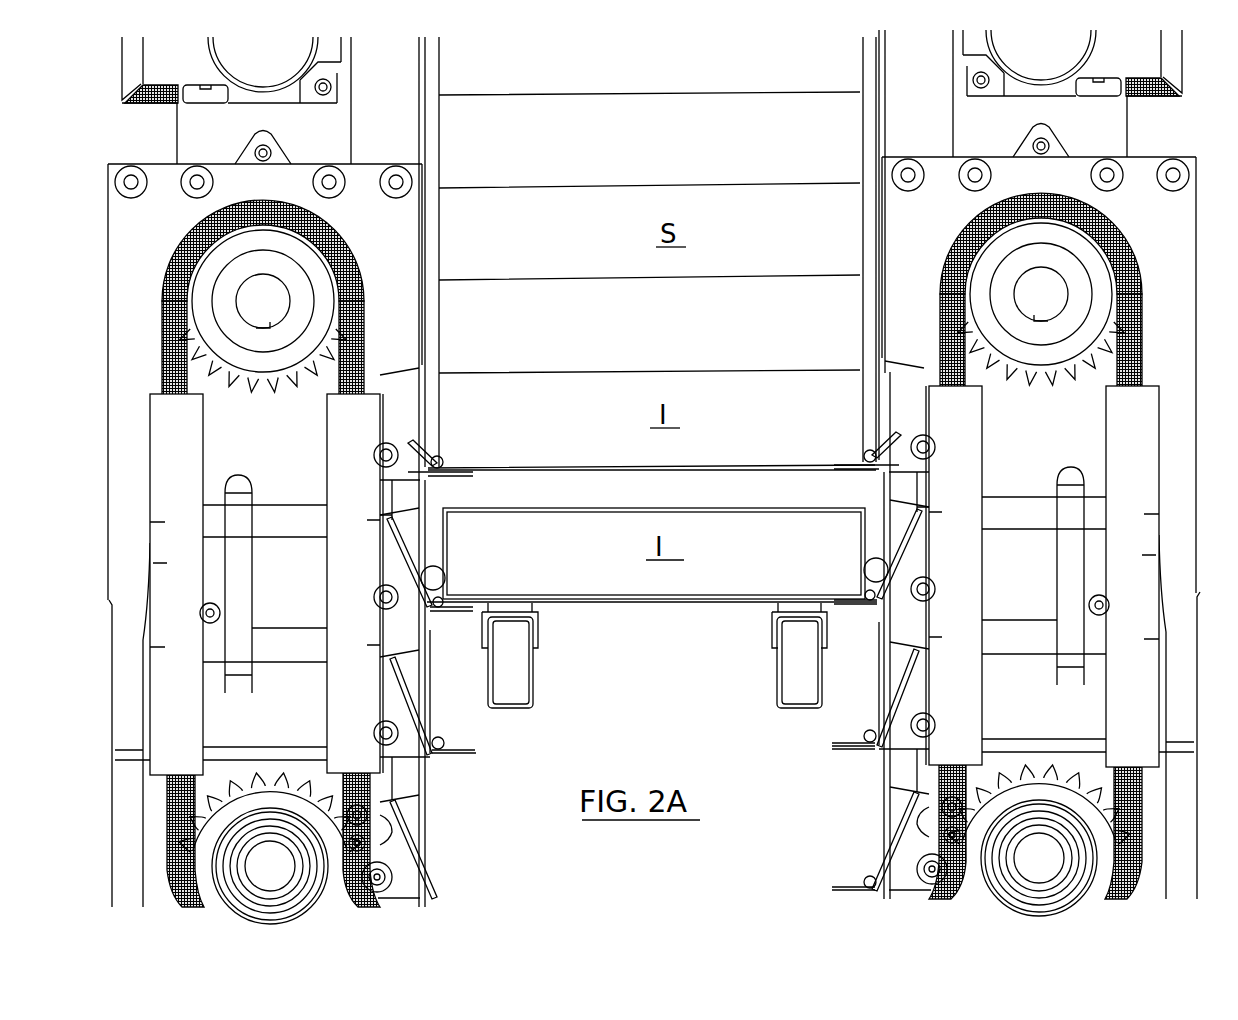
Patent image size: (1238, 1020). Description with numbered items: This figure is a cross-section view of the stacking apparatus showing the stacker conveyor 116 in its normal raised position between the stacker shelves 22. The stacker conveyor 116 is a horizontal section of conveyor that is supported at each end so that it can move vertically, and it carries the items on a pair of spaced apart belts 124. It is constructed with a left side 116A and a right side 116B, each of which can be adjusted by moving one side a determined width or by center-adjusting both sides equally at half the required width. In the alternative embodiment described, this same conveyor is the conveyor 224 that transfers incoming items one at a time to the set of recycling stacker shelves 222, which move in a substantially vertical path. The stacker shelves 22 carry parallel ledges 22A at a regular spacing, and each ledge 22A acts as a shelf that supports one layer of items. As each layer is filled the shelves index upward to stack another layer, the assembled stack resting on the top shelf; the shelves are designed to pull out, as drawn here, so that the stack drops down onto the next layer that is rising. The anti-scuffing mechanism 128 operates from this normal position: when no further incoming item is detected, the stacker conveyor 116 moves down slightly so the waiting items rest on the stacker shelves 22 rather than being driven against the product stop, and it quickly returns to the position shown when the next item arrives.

The ledge 22A is at (462, 467).
The right side 116B is at (536, 667).
The left side 116A is at (770, 666).
The stacker conveyor 116 is at (654, 670).
The spaced apart belts 124 is at (654, 670).
The conveyor 224 is at (654, 670).
The stacker shelves 22 is at (493, 763).
The recycling stacker shelves 222 is at (453, 760).
The anti-scuffing mechanism 128 is at (806, 750).